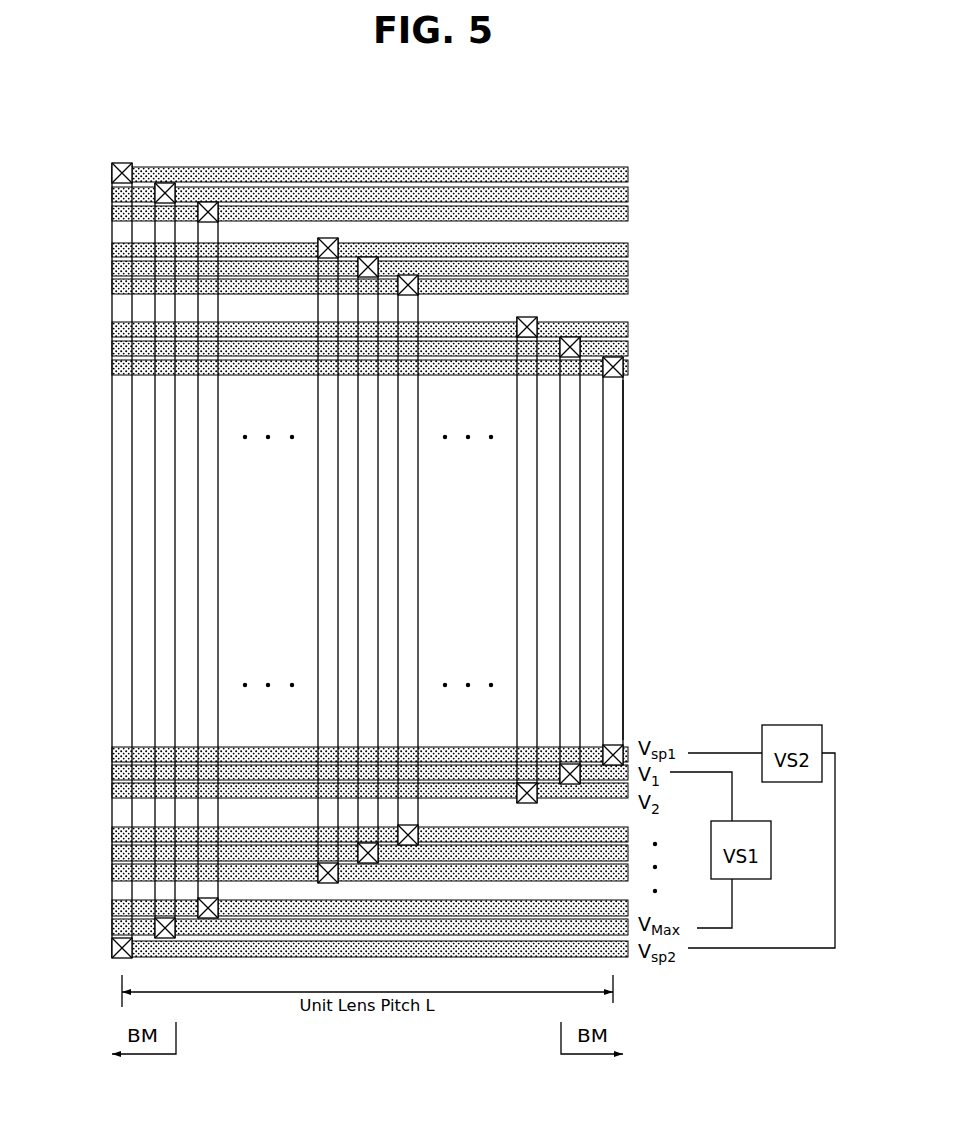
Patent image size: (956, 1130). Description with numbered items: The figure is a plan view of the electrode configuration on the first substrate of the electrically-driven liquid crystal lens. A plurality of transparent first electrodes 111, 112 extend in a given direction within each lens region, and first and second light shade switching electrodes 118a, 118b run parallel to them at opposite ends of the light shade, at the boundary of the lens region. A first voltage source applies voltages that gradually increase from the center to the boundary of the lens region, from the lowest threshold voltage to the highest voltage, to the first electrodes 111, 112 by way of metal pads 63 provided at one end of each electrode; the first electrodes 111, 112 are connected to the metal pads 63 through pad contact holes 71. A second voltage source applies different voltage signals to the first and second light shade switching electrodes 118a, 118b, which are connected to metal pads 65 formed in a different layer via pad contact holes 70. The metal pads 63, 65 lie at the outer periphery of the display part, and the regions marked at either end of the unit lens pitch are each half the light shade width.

The pad contact hole 70 is at (623, 367).
The pad contact hole 71 is at (568, 340).
The first electrode 111 is at (575, 525).
The first electrode 112 is at (535, 472).
The first light shade switching electrode 118a is at (622, 577).
The second light shade switching electrode 118b is at (115, 527).
The metal pad 63 is at (628, 853).
The metal pad 65 is at (618, 950).